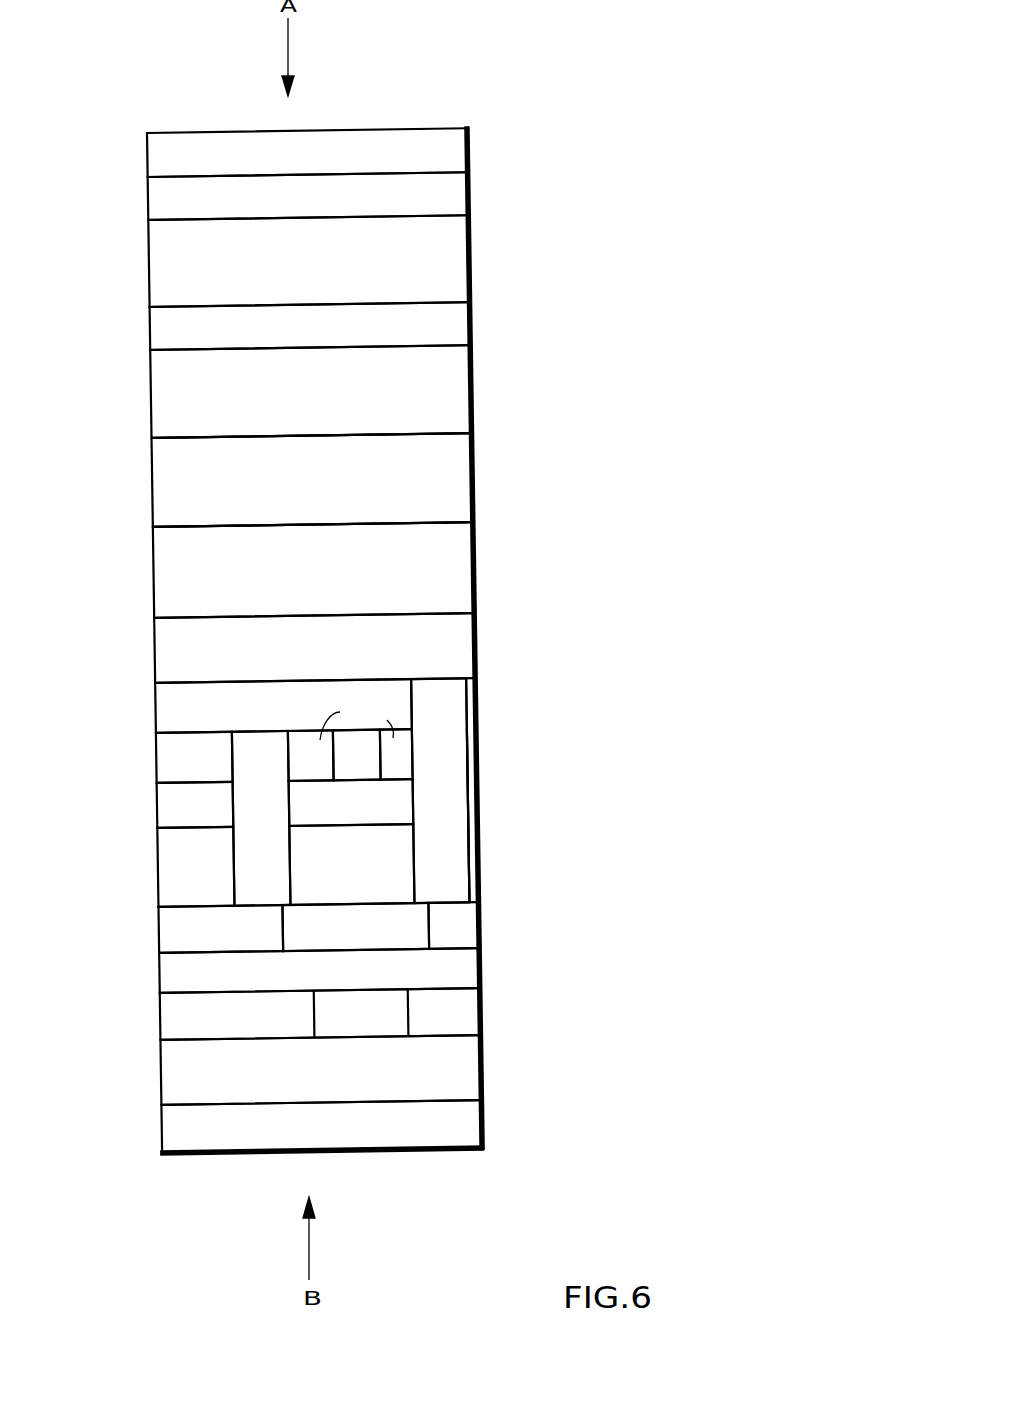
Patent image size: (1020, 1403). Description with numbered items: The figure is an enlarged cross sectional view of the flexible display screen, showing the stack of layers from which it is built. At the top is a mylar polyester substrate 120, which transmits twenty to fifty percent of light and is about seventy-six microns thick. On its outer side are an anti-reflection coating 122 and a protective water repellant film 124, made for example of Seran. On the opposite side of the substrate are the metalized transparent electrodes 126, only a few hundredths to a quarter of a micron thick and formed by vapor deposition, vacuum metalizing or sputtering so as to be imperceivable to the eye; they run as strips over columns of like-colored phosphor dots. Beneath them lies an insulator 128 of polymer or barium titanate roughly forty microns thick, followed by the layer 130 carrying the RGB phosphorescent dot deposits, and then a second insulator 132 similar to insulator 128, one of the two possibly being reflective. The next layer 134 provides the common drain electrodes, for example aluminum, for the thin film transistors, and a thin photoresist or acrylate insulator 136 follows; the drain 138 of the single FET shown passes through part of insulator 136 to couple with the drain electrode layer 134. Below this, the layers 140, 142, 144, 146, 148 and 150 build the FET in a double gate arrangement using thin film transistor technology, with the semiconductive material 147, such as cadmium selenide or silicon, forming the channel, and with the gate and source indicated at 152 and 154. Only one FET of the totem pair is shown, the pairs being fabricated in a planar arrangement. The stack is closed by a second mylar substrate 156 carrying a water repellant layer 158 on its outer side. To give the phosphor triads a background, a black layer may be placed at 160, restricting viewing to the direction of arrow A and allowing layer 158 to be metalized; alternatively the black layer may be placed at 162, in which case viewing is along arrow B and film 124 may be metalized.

The mylar polyester substrate 120 is at (450, 265).
The anti-reflection coating 122 is at (447, 193).
The protective water repellant film 124 is at (448, 152).
The metalized transparent electrodes 126 is at (450, 323).
The insulator 128 is at (455, 390).
The RGB phosphorescent dot layer 130 is at (462, 467).
The insulator 132 is at (462, 578).
The drain electrode layer 134 is at (457, 655).
The photoresist or acrylate insulator 136 is at (468, 703).
The drain 138 is at (450, 810).
The FET layer 140 is at (481, 762).
The FET layer 142 is at (482, 820).
The FET layer 144 is at (482, 867).
The FET layer 146 is at (480, 922).
The semiconductive material 147 is at (330, 913).
The FET layer 148 is at (472, 972).
The FET layer 150 is at (470, 1005).
The gate 152 is at (255, 805).
The source 154 is at (363, 755).
The mylar substrate 156 is at (467, 1077).
The water repellant layer 158 is at (470, 1127).
The black layer location 160 is at (153, 530).
The black layer location 162 is at (150, 438).